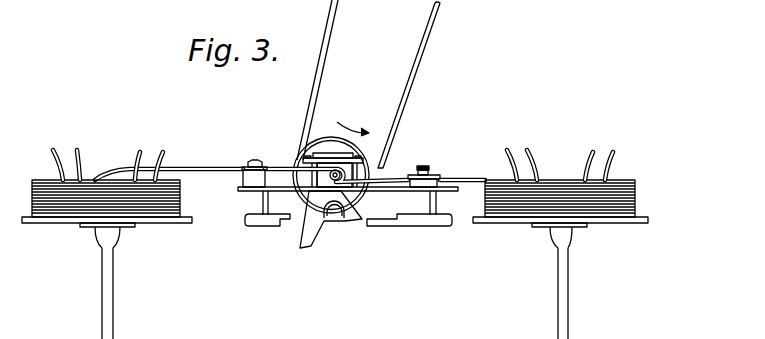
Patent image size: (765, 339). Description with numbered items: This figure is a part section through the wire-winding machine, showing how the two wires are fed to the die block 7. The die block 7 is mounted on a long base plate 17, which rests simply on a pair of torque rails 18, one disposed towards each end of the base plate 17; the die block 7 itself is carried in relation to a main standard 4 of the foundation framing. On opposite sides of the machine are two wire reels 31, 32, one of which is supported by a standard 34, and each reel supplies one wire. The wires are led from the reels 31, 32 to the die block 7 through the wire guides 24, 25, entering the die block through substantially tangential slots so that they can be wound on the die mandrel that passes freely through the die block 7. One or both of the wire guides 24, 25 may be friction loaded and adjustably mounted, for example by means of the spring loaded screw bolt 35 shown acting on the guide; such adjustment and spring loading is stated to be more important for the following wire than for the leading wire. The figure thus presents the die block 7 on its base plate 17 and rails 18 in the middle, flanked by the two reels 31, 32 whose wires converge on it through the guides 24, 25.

The main standard 4 is at (305, 227).
The die block 7 is at (324, 219).
The base plate 17 is at (252, 190).
The torque rails 18 is at (268, 200).
The wire guide 24 is at (432, 176).
The wire guide 25 is at (255, 162).
The wire reel 31 is at (88, 183).
The wire reel 32 is at (557, 182).
The standard 34 is at (566, 327).
The spring loaded screw bolt 35 is at (420, 166).